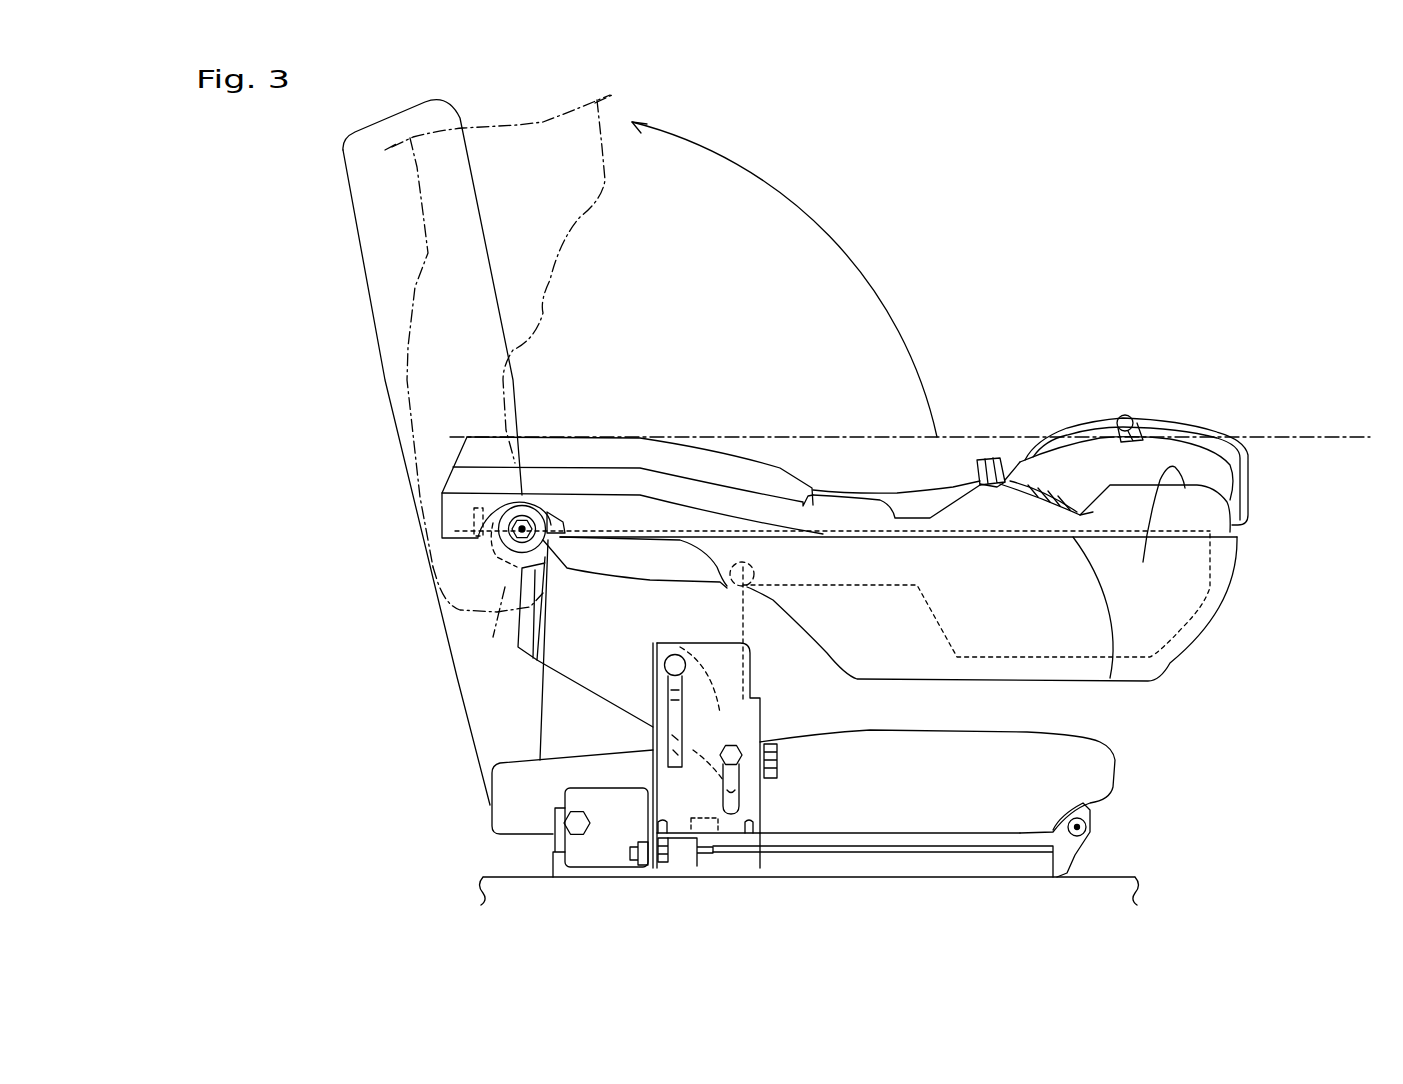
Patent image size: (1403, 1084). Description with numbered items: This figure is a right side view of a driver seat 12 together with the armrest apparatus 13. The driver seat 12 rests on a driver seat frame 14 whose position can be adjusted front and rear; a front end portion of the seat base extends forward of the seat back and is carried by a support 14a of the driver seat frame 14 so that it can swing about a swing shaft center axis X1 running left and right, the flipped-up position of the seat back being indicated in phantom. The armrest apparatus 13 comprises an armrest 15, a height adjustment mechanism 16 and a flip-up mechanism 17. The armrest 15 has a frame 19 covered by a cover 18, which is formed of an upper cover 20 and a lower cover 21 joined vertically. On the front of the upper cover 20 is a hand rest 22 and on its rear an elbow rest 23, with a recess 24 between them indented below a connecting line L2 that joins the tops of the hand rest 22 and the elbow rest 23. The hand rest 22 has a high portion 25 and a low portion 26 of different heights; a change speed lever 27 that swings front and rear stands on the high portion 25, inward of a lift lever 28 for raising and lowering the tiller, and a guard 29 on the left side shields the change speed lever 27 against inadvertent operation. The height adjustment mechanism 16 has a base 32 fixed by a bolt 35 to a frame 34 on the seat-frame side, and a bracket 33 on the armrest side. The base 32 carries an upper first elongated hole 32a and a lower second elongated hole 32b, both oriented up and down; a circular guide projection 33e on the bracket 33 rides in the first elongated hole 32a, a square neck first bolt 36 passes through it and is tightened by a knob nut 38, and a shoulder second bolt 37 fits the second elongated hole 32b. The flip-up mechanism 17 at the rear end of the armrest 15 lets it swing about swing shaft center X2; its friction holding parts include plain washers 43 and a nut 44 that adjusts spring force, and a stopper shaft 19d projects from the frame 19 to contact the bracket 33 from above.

The driver seat 12 is at (372, 267).
The armrest apparatus 13 is at (1238, 292).
The driver seat frame 14 is at (925, 848).
The support 14a is at (1082, 852).
The armrest 15 is at (600, 227).
The height adjustment mechanism 16 is at (712, 726).
The flip-up mechanism 17 is at (449, 559).
The cover 18 is at (964, 557).
The frame 19 is at (560, 522).
The stopper shaft 19d is at (752, 567).
The upper cover 20 is at (1233, 503).
The lower cover 21 is at (1240, 560).
The hand rest 22 is at (1136, 417).
The elbow rest 23 is at (668, 455).
The recess 24 is at (855, 461).
The high portion 25 is at (1180, 440).
The low portion 26 is at (1156, 532).
The change speed lever 27 is at (1128, 416).
The lift lever 28 is at (982, 457).
The guard 29 is at (1223, 430).
The base 32 is at (748, 663).
The first elongated hole 32a is at (655, 727).
The second elongated hole 32b is at (770, 797).
The bracket 33 is at (588, 660).
The guide projection 33e is at (656, 706).
The frame 34 is at (760, 877).
The bolt 35 is at (777, 766).
The first bolt 36 is at (674, 655).
The second bolt 37 is at (742, 745).
The knob nut 38 is at (706, 713).
The plain washers 43 is at (525, 548).
The nut 44 is at (533, 517).
The swing shaft center axis X1 is at (1068, 820).
The swing shaft center X2 is at (487, 580).
The connecting line L2 is at (1312, 437).